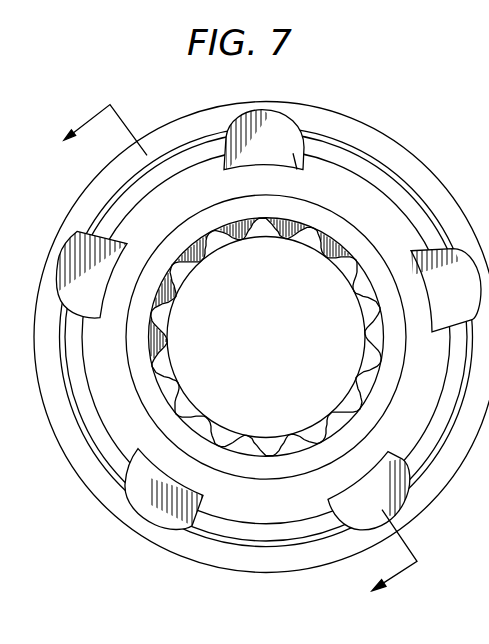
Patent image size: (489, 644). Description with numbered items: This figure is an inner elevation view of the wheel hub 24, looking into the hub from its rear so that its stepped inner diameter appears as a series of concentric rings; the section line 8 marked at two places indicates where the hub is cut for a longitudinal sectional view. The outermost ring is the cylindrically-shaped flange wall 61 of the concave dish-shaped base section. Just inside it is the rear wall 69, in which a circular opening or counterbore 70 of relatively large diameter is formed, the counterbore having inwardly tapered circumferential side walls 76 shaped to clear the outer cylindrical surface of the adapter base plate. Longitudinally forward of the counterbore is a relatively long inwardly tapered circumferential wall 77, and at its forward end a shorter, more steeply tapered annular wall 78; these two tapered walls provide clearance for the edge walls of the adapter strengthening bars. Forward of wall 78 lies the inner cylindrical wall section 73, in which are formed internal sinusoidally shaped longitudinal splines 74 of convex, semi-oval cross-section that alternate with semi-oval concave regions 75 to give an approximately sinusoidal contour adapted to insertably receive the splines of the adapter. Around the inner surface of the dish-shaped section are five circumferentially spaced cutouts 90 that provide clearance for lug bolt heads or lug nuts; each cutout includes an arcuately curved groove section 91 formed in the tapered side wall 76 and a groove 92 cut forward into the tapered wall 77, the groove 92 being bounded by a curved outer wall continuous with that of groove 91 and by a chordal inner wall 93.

The wheel hub 24 is at (259, 346).
The cylindrically-shaped flange wall 61 is at (192, 116).
The rear wall 69 is at (112, 503).
The counterbore 70 is at (94, 430).
The inner cylindrical wall section 73 is at (321, 262).
The splines 74 is at (190, 268).
The semi-oval concave regions 75 is at (175, 278).
The inwardly tapered circumferential side walls 76 is at (400, 181).
The inwardly tapered circumferential wall 77 is at (228, 508).
The tapered annular wall 78 is at (280, 470).
The section line 8- 8 is at (392, 132).
The cutouts 90 is at (96, 232).
The arcuately curved groove section 91 is at (272, 121).
The groove 92 is at (297, 172).
The chordal inner wall 93 is at (259, 173).